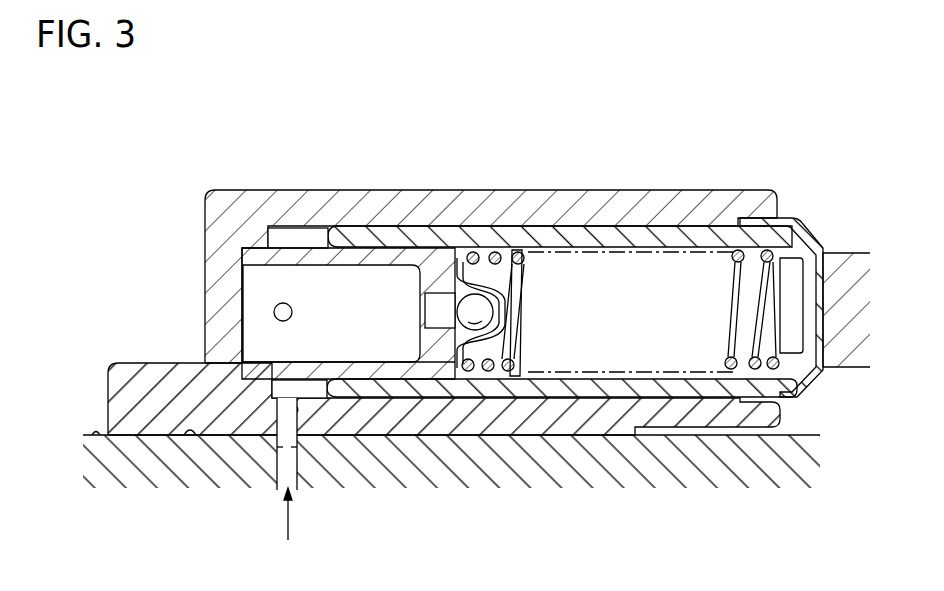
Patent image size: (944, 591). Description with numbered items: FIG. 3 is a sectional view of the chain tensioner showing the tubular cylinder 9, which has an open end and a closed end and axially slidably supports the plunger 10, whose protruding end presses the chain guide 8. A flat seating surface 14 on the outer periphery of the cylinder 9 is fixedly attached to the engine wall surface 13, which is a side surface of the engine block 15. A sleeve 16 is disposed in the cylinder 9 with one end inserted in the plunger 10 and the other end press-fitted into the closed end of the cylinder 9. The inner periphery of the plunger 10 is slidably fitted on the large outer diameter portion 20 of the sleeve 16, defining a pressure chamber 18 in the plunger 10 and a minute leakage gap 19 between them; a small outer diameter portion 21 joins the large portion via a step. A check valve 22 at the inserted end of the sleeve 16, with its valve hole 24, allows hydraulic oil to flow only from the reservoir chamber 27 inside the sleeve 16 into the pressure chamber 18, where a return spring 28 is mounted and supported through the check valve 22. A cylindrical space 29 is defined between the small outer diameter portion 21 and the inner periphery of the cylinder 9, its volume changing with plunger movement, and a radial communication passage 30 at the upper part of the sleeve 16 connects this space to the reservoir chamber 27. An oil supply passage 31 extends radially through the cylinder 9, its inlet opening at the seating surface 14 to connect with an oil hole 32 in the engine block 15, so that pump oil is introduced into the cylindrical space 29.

The chain guide 8 is at (857, 258).
The cylinder 9 is at (670, 200).
The plunger 10 is at (784, 225).
The engine wall surface 13 is at (190, 436).
The seating surface 14 is at (142, 436).
The engine block 15 is at (96, 440).
The sleeve 16 is at (240, 252).
The pressure chamber 18 is at (602, 263).
The leakage gap 19 is at (397, 372).
The large outer diameter portion 20 is at (390, 246).
The small outer diameter portion 21 is at (310, 247).
The check valve 22 is at (527, 308).
The valve hole 24 is at (447, 300).
The reservoir chamber 27 is at (253, 313).
The return spring 28 is at (493, 257).
The cylindrical space 29 is at (283, 390).
The communication passage 30 is at (293, 311).
The oil supply passage 31 is at (296, 410).
The oil hole 32 is at (280, 463).